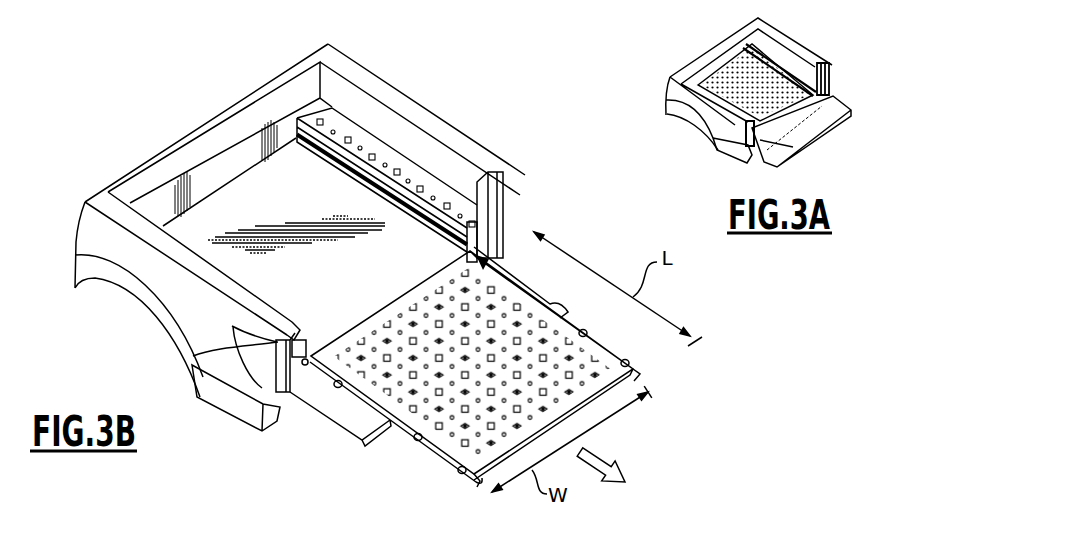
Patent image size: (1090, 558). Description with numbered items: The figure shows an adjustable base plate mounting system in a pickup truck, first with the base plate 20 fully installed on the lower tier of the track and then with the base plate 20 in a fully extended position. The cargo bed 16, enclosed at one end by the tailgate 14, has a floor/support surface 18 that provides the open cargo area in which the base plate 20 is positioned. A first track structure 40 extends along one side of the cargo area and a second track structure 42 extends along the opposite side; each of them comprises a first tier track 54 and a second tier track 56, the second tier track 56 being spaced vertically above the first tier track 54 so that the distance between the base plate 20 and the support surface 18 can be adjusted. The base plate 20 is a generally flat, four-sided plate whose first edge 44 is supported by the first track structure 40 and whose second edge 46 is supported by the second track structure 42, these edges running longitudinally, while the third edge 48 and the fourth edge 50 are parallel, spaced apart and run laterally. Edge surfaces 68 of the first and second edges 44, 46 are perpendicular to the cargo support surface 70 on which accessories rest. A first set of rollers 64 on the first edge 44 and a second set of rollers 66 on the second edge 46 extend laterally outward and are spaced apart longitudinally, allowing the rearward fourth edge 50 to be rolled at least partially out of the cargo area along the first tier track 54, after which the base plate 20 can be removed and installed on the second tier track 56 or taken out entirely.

In FIG. 3B, the tailgate 14 is at (333, 403).
In FIG. 3A, the tailgate 14 is at (825, 115).
In FIG. 3B, the cargo bed 16 is at (95, 245).
In FIG. 3A, the cargo bed 16 is at (675, 93).
In FIG. 3B, the floor/support surface 18 is at (258, 217).
In FIG. 3B, the base plate 20 is at (524, 236).
In FIG. 3A, the base plate 20 is at (793, 147).
In FIG. 3B, the first track structure 40 is at (193, 366).
In FIG. 3A, the first track structure 40 is at (756, 147).
In FIG. 3B, the second track structure 42 is at (440, 197).
In FIG. 3A, the second track structure 42 is at (798, 75).
In FIG. 3B, the first edge 44 is at (405, 430).
In FIG. 3B, the second edge 46 is at (580, 330).
In FIG. 3B, the third edge 48 is at (408, 293).
In FIG. 3A, the third edge 48 is at (727, 70).
In FIG. 3B, the fourth edge 50 is at (640, 383).
In FIG. 3A, the fourth edge 50 is at (835, 95).
In FIG. 3B, the first tier track 54 is at (470, 240).
In FIG. 3B, the second tier track 56 is at (505, 228).
In FIG. 3B, the first set of rollers 64 is at (462, 473).
In FIG. 3B, the second set of rollers 66 is at (630, 360).
In FIG. 3B, the edge surfaces 68 is at (552, 308).
In FIG. 3B, the cargo support surface 70 is at (482, 484).